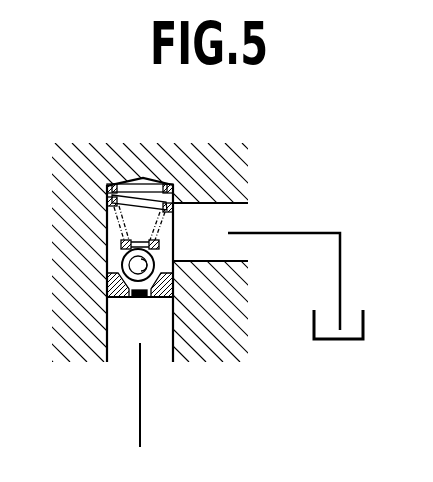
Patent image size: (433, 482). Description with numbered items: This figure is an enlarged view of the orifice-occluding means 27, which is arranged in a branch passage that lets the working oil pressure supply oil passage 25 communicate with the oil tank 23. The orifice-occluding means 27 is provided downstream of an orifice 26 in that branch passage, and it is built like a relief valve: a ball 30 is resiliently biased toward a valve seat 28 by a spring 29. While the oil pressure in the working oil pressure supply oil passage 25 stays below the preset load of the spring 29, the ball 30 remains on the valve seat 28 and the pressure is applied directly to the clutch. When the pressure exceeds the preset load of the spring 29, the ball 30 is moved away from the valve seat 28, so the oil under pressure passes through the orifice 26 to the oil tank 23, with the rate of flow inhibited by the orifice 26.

The oil tank 23 is at (364, 327).
The working oil pressure supply oil passage 25 is at (141, 398).
The orifice 26 is at (175, 291).
The orifice-occluding means 27 is at (186, 234).
The valve seat 28 is at (107, 292).
The spring 29 is at (150, 185).
The ball 30 is at (123, 266).